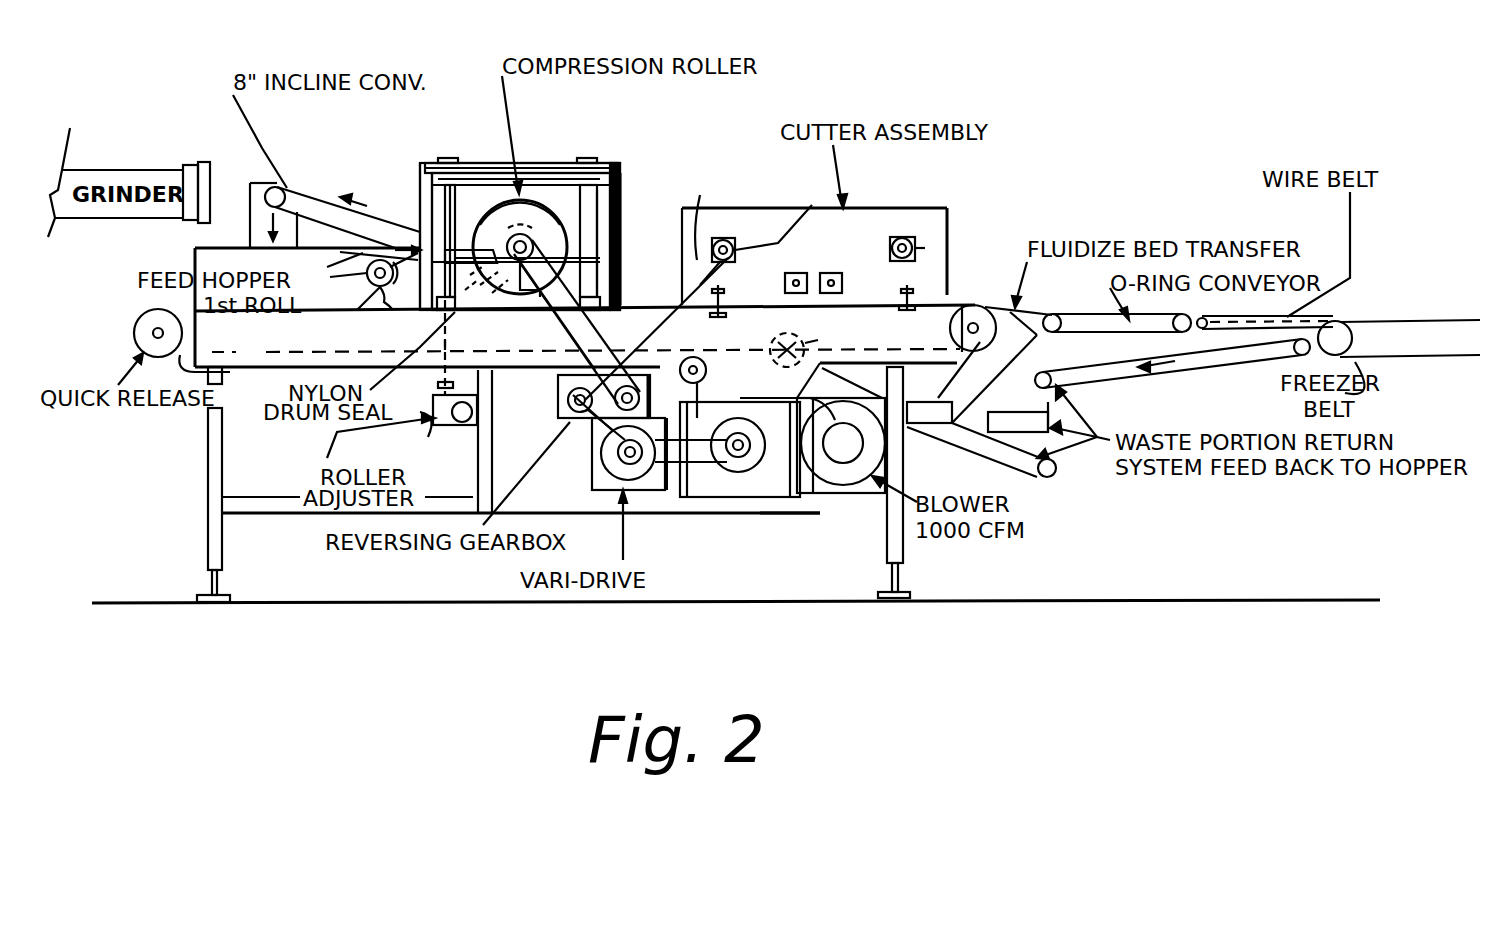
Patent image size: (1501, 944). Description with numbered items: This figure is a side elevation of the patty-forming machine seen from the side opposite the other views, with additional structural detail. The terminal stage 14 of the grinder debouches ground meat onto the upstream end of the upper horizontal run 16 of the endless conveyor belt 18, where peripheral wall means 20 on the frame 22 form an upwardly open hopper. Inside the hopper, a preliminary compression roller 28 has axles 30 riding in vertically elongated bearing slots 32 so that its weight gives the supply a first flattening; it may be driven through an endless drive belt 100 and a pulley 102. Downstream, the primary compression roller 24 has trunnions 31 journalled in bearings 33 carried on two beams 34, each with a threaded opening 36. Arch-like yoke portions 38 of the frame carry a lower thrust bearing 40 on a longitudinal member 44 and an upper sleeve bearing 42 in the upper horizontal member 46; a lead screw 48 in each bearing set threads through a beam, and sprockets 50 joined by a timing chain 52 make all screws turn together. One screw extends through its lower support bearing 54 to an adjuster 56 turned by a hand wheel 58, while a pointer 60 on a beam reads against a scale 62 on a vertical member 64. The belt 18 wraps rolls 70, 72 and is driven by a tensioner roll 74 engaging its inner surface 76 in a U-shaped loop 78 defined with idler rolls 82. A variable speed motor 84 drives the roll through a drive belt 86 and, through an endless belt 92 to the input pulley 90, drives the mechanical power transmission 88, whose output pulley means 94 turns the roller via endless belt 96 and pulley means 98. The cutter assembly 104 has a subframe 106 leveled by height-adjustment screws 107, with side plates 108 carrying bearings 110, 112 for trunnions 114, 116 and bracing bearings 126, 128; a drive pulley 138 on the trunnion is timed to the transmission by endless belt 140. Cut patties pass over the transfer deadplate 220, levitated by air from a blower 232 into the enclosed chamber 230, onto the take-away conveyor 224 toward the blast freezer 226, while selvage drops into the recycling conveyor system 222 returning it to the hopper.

The terminal stage of grinder 14 is at (123, 170).
The upper horizontal run 16 is at (167, 310).
The endless conveyor belt 18 is at (586, 357).
The peripheral wall means 20 is at (207, 265).
The frame 22 is at (223, 477).
The primary compression roller 24 is at (538, 195).
The preliminary compression roller 28 is at (370, 288).
The axles 30 is at (356, 312).
The trunnions 31 is at (542, 223).
The bearing slots 32 is at (399, 312).
The bearings 33 is at (505, 233).
The beams 34 is at (600, 245).
The helically threaded opening 36 is at (605, 267).
The yoke portions 38 is at (622, 193).
The thrust bearing 40 is at (620, 308).
The sleeve bearing 42 is at (617, 165).
The longitudinal member 44 is at (675, 307).
The upper horizontal member 46 is at (533, 168).
The lead screw 48 is at (612, 222).
The sprocket 50 is at (447, 158).
The timing chain 52 is at (532, 157).
The lower support bearing 54 is at (450, 350).
The adjuster 56 is at (435, 398).
The hand wheel 58 is at (443, 438).
The pointer 60 is at (458, 183).
The scale 62 is at (417, 187).
The vertical member 64 is at (417, 167).
The upstream roll 70 is at (145, 345).
The downstream roll 72 is at (978, 310).
The tensioner roll 74 is at (740, 472).
The inner surface 76 is at (768, 380).
The U-shaped loop 78 is at (777, 355).
The idler rolls 82 is at (693, 356).
The variable speed motor 84 is at (600, 480).
The drive belt 86 is at (663, 472).
The mechanical power transmission 88 is at (558, 386).
The input pulley 90 is at (577, 407).
The endless belt 92 is at (588, 443).
The output pulley means 94 is at (653, 393).
The endless belt 96 is at (567, 337).
The pulley means 98 is at (510, 200).
The endless drive belt 100 is at (466, 298).
The pulley 102 is at (323, 268).
The cutter assembly 104 is at (898, 207).
The subframe 106 is at (940, 203).
The height-adjustment screws 107 is at (816, 317).
The side plates 108 is at (938, 235).
The bearings 110 is at (728, 242).
The bearings 112 is at (898, 237).
The trunnion 114 is at (725, 257).
The trunnion 116 is at (925, 248).
The bearings 126 is at (798, 273).
The bearings 128 is at (847, 277).
The drive pulley 138 is at (784, 214).
The endless belt 140 is at (722, 215).
The transfer deadplate 220 is at (1032, 310).
The recycling conveyor system 222 is at (306, 195).
The take-away conveyor 224 is at (1296, 309).
The blast freezer 226 is at (1375, 322).
The enclosed chamber 230 is at (1035, 336).
The blower 232 is at (835, 480).